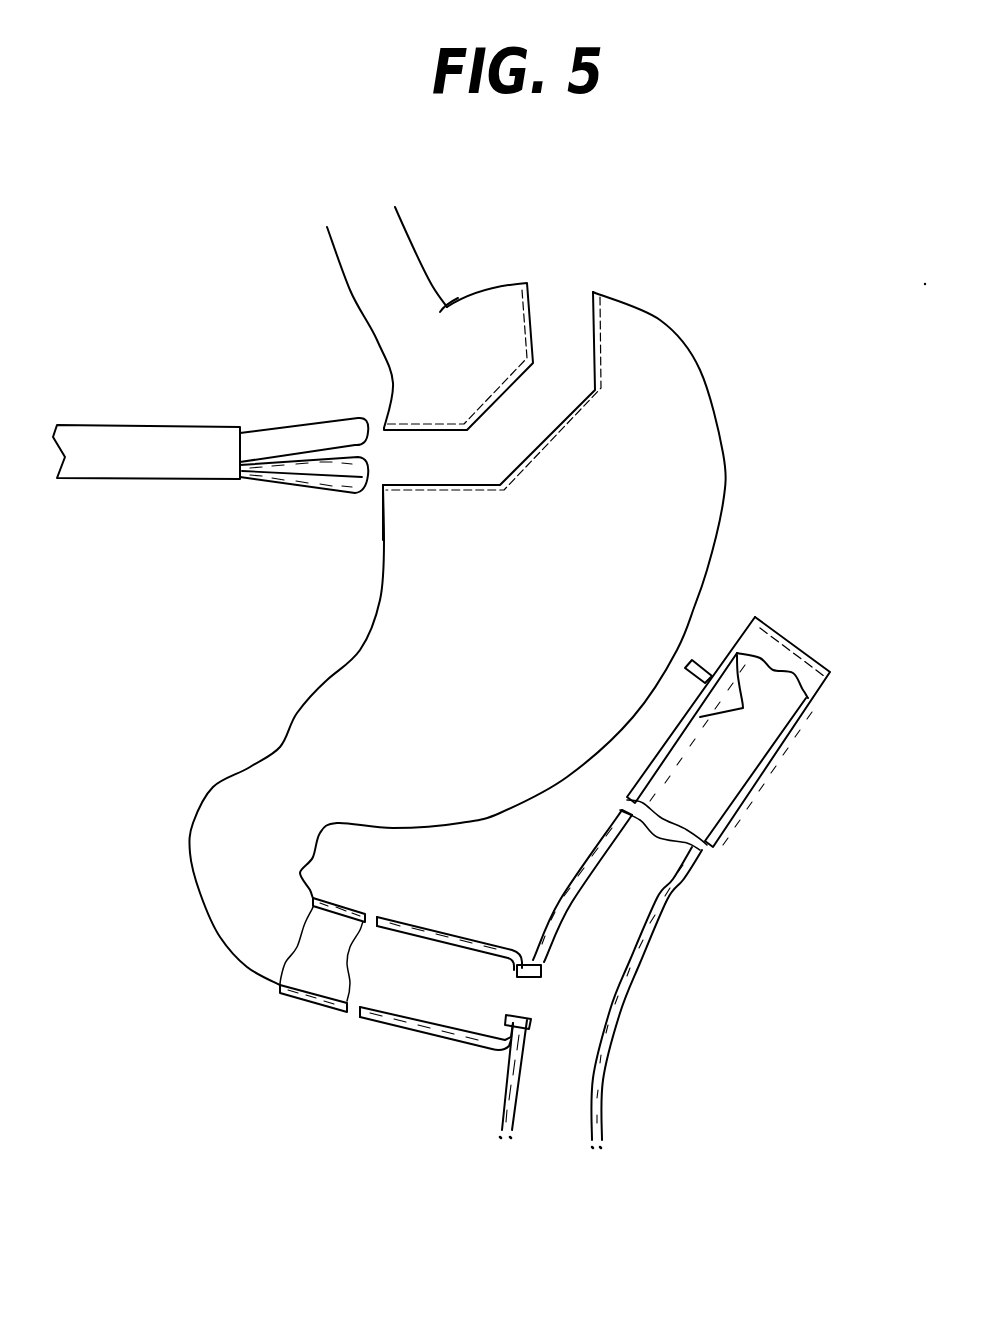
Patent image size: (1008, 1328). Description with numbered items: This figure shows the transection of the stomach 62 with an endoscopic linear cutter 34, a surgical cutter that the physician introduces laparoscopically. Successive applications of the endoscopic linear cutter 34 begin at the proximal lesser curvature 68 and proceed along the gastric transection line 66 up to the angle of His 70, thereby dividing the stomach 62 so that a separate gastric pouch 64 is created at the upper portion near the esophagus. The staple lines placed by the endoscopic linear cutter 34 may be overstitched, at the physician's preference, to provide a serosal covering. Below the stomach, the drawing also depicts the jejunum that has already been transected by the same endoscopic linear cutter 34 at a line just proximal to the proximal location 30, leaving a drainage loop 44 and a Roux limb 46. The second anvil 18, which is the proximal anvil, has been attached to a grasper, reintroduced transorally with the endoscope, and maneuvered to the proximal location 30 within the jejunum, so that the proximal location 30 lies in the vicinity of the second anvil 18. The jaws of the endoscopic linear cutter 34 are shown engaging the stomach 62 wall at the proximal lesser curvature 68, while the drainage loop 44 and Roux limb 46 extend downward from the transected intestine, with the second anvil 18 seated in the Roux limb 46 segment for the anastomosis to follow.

The second anvil 18 is at (743, 708).
The proximal location 30 is at (540, 932).
The endoscopic linear cutter 34 is at (203, 493).
The drainage loop 44 is at (390, 1023).
The Roux limb 46 is at (605, 1110).
The stomach 62 is at (777, 480).
The gastric pouch 64 is at (417, 387).
The gastric transection line 66 is at (500, 403).
The proximal lesser curvature 68 is at (385, 527).
The angle of His 70 is at (447, 307).